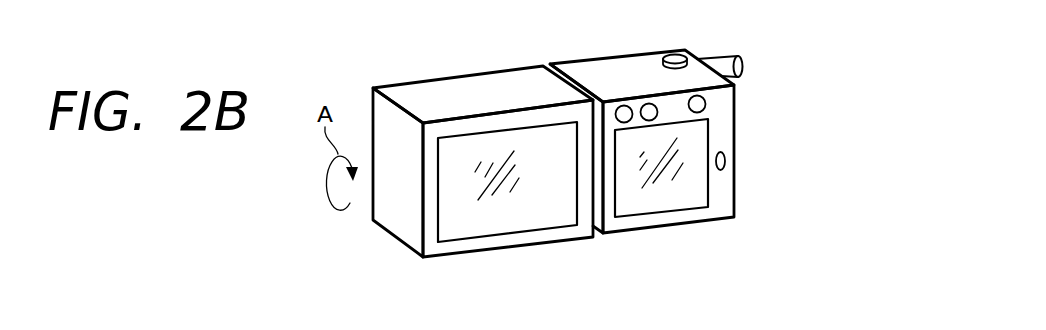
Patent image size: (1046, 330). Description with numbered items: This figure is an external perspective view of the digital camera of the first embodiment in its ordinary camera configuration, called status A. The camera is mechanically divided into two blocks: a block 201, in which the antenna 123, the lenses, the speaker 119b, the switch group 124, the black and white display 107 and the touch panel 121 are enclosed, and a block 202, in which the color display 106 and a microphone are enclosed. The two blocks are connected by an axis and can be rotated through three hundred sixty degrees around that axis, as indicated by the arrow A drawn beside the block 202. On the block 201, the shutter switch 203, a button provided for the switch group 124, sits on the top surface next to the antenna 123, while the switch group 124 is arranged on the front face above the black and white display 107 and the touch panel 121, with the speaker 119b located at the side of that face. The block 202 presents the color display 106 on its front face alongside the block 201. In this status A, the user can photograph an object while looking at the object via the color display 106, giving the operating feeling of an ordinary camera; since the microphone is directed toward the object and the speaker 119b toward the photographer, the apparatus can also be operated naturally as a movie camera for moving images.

The block 202 is at (430, 88).
The block 201 is at (590, 70).
The shutter switch 203 is at (675, 53).
The antenna 123 is at (743, 62).
The switch group 124 is at (632, 122).
The speaker 119b is at (725, 158).
The touch panel 121 is at (702, 195).
The black and white display 107 is at (667, 182).
The color display 106 is at (518, 188).